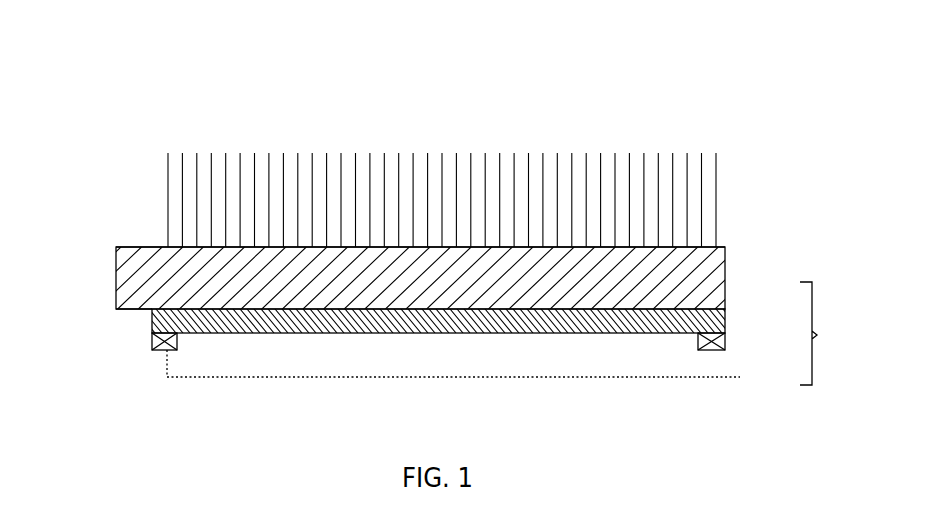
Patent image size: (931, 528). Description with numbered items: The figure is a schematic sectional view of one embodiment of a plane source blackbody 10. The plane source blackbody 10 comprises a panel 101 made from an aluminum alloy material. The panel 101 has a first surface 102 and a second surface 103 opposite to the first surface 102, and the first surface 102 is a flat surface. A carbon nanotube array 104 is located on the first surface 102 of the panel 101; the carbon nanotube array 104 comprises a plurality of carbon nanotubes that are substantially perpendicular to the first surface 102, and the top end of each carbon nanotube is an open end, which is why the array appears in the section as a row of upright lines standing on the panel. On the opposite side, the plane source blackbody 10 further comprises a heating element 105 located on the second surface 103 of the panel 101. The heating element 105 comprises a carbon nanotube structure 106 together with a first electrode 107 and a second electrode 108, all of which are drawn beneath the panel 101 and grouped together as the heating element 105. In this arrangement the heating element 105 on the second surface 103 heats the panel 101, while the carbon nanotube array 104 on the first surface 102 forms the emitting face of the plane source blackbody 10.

The plane source blackbody 10 is at (415, 80).
The panel 101 is at (117, 270).
The first surface 102 is at (128, 245).
The second surface 103 is at (126, 313).
The carbon nanotube array 104 is at (704, 162).
The heating element 105 is at (835, 333).
The carbon nanotube structure 106 is at (703, 307).
The first electrode 107 is at (725, 341).
The second electrode 108 is at (740, 377).